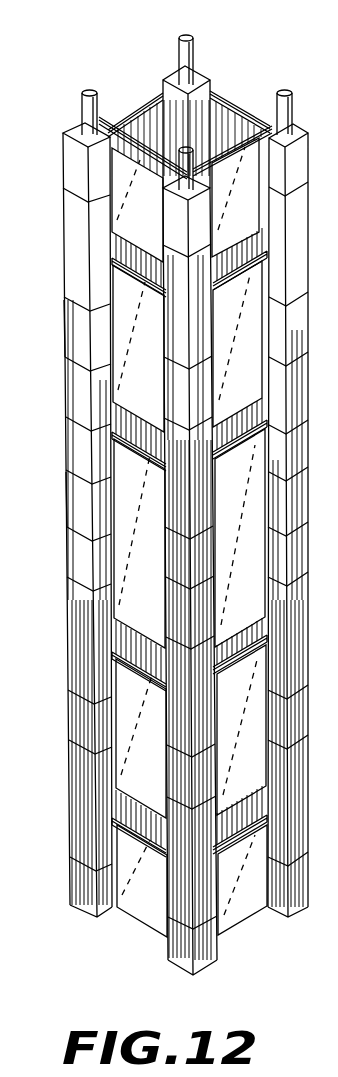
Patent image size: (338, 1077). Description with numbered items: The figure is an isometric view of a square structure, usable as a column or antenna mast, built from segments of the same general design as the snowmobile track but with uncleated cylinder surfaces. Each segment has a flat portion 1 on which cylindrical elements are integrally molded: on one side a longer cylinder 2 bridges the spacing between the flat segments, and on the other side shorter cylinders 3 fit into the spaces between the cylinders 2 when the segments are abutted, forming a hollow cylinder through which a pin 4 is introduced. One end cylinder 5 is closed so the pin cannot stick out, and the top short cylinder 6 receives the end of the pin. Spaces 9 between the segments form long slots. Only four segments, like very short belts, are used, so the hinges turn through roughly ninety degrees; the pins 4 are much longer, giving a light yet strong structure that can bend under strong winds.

The flat portion 1 is at (146, 369).
The cylindrical element 2 is at (63, 248).
The short cylinder 3 is at (64, 333).
The pin 4 is at (180, 42).
The end cylinder 5 is at (67, 507).
The top short cylinder 6 is at (63, 160).
The space 9 is at (148, 432).